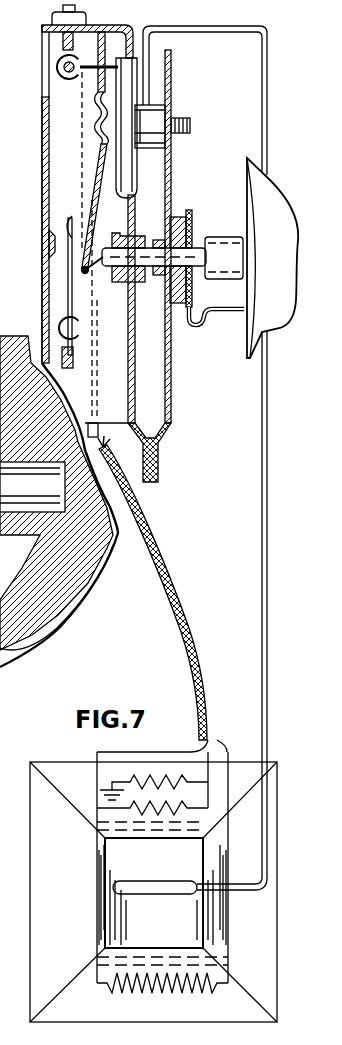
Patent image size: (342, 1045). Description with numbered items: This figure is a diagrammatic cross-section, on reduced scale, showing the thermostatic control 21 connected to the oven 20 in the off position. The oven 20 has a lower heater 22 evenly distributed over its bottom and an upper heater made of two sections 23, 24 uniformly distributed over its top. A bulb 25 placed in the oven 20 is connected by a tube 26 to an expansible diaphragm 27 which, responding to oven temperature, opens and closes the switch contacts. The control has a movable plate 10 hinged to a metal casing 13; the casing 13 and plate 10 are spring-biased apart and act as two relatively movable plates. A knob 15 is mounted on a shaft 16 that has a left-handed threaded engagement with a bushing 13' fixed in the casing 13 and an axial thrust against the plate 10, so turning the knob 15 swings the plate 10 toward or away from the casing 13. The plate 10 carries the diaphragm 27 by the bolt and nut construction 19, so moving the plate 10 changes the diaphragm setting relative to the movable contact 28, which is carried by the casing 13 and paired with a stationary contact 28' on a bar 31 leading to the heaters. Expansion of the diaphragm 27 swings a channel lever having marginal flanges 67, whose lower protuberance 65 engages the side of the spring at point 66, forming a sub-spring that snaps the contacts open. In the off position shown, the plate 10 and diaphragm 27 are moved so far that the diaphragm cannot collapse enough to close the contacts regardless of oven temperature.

The casing 13 is at (67, 221).
The movable plate 10 is at (172, 62).
The bolt and nut construction 19 is at (185, 120).
The marginal flanges 67 is at (92, 168).
The expansible diaphragm 27 is at (125, 170).
The thermostatic control 21 is at (212, 178).
The bar 31 is at (42, 194).
The knob 15 is at (300, 197).
The shaft 16 is at (198, 258).
The movable switch contact 28 is at (69, 281).
The stationary switch contact 28' is at (28, 240).
The point 66 is at (82, 270).
The protuberance 65 is at (90, 273).
The bushing 13' is at (149, 338).
The tube 26 is at (263, 508).
The oven 20 is at (70, 910).
The upper heater section 24 is at (149, 778).
The upper heater section 23 is at (165, 812).
The bulb 25 is at (178, 882).
The lower heater 22 is at (152, 995).